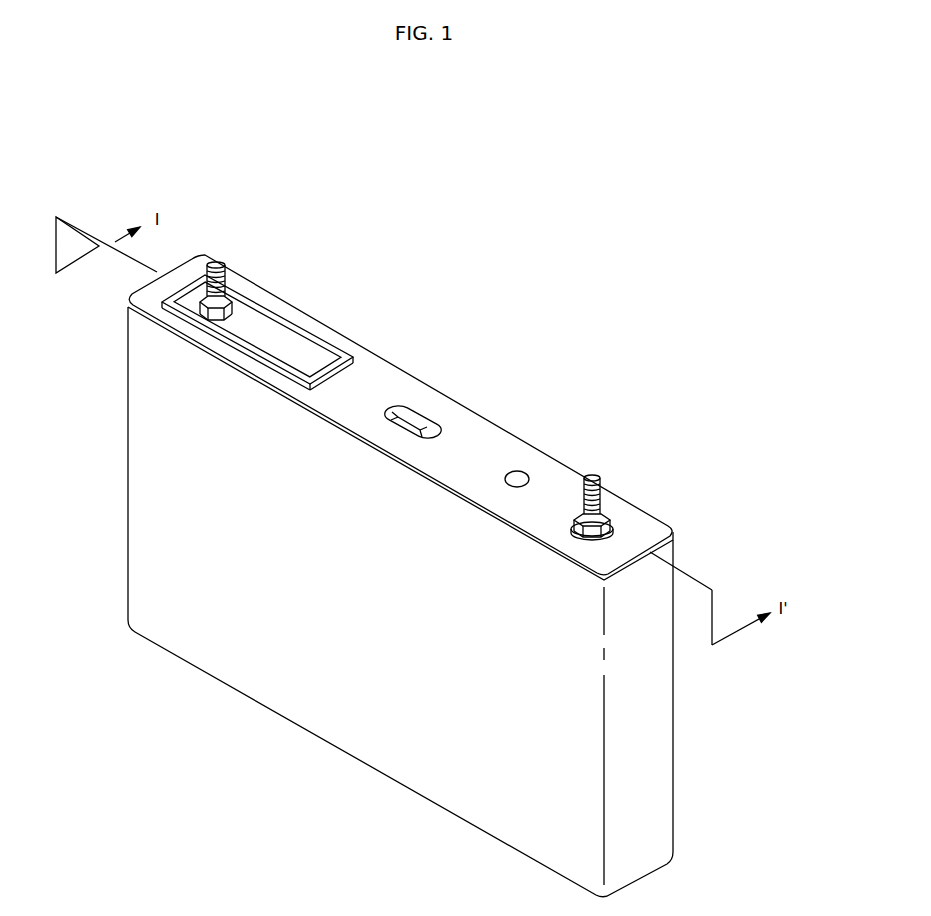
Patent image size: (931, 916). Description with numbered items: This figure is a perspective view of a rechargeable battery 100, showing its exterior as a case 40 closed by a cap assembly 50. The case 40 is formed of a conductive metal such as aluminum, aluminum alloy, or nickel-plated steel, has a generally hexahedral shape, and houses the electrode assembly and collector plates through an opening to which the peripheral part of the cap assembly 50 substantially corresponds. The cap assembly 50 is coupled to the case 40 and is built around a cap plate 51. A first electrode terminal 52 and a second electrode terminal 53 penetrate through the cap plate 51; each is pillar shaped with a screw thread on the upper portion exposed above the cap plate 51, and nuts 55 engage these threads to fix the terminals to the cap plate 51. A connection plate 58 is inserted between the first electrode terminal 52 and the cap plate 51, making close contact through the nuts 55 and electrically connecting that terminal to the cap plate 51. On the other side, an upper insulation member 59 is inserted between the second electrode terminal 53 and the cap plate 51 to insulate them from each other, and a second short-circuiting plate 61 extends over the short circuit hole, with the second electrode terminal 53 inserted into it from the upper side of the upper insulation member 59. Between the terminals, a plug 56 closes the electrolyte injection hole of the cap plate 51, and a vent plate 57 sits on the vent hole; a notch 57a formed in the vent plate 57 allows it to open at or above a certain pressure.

The rechargeable battery 100 is at (447, 240).
The case 40 is at (345, 737).
The cap assembly 50 is at (500, 426).
The cap plate 51 is at (385, 387).
The first electrode terminal 52 is at (593, 478).
The second electrode terminal 53 is at (215, 266).
The nuts 55 is at (192, 313).
The plug 56 is at (520, 474).
The vent plate 57 is at (418, 406).
The notch 57a is at (425, 420).
The connection plate 58 is at (610, 518).
The upper insulation member 59 is at (290, 318).
The second short-circuiting plate 61 is at (248, 318).